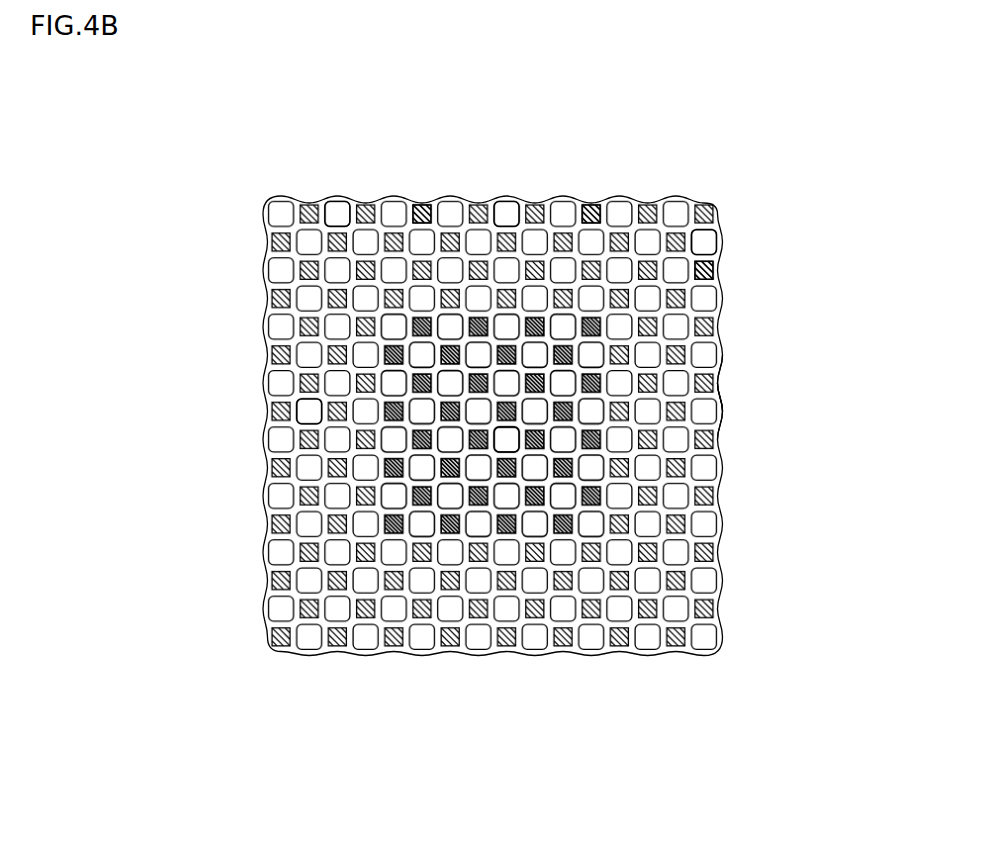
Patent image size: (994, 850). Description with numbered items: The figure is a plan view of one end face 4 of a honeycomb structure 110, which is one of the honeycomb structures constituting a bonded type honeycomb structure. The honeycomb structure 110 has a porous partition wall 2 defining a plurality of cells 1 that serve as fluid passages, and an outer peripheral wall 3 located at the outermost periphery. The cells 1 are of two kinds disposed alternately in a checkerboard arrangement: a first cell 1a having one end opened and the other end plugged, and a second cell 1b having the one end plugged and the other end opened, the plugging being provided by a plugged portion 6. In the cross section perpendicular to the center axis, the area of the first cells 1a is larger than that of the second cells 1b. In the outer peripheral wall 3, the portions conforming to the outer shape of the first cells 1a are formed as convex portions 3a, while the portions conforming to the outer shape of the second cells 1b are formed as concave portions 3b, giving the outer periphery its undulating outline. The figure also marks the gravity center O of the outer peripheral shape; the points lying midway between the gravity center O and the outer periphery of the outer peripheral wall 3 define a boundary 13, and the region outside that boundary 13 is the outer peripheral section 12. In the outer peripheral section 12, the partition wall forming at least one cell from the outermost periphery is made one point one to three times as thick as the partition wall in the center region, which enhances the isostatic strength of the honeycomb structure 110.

The honeycomb structure 110 is at (906, 42).
The cell 1 is at (341, 214).
The first cell 1a is at (702, 246).
The second cell 1b is at (710, 272).
The partition wall 2 is at (510, 218).
The outer peripheral wall 3 is at (596, 212).
The convex portion 3a is at (723, 411).
The concave portion 3b is at (720, 389).
The one end face 4 is at (694, 209).
The plugged portion 6 is at (424, 214).
The outer peripheral section 12 is at (315, 419).
The boundary formed by points at the middle of the distance between a gravity center 13 is at (420, 361).
The gravity center O is at (499, 434).